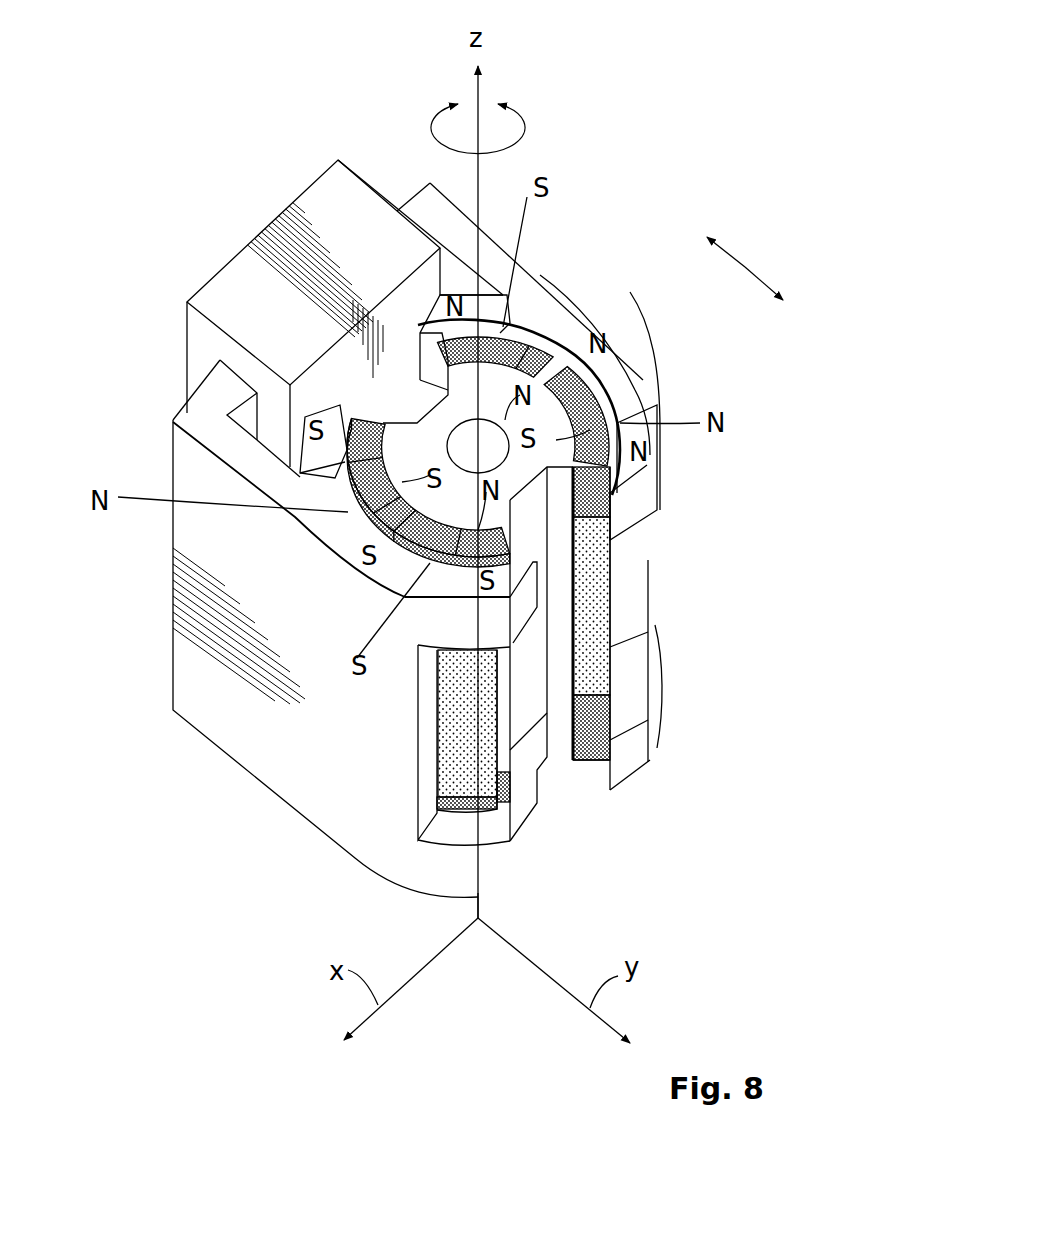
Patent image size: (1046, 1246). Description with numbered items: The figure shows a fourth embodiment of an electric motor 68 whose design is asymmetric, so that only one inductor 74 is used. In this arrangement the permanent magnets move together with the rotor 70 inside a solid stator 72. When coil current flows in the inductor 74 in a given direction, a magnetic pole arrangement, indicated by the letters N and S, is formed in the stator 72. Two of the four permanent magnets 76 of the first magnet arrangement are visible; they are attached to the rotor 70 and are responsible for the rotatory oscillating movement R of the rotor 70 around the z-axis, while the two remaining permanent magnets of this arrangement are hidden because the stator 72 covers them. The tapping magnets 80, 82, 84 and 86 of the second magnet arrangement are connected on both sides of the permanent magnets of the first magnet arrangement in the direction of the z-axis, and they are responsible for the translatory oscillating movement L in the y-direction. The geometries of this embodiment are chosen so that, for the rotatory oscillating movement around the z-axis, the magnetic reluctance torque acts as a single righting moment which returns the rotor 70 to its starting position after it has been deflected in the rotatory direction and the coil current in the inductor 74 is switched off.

The motor 68 is at (690, 137).
The rotor 70 is at (415, 432).
The stator 72 is at (617, 357).
The inductor 74 is at (233, 298).
The permanent magnets 76 is at (473, 711).
The tapping magnet 80 is at (600, 408).
The tapping magnet 82 is at (527, 350).
The tapping magnet 84 is at (367, 462).
The tapping magnet 86 is at (510, 547).
The rotation direction R is at (523, 117).
The translatory oscillating movement L is at (745, 267).